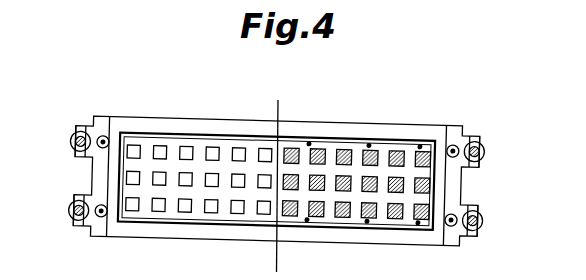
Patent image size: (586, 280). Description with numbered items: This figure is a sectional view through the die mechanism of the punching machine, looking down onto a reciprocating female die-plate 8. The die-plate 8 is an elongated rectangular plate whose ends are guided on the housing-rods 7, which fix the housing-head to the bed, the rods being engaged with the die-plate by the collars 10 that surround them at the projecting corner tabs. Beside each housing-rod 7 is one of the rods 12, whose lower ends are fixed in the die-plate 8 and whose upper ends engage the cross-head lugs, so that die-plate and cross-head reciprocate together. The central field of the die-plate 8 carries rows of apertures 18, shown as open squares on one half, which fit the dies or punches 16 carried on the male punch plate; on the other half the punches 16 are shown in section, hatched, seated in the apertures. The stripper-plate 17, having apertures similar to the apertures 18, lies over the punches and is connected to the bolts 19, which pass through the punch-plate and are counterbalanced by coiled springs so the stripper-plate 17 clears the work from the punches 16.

The housing-rod 7 is at (71, 142).
The female die-plate 8 is at (227, 137).
The collar 10 is at (74, 134).
The rod 12 is at (103, 136).
The die or punch 16 is at (368, 142).
The stripper-plate 17 is at (327, 222).
The aperture 18 is at (213, 210).
The bolt 19 is at (419, 143).